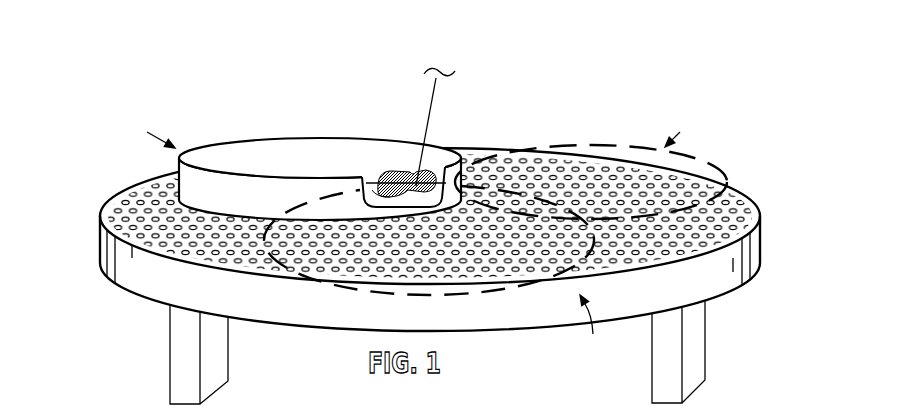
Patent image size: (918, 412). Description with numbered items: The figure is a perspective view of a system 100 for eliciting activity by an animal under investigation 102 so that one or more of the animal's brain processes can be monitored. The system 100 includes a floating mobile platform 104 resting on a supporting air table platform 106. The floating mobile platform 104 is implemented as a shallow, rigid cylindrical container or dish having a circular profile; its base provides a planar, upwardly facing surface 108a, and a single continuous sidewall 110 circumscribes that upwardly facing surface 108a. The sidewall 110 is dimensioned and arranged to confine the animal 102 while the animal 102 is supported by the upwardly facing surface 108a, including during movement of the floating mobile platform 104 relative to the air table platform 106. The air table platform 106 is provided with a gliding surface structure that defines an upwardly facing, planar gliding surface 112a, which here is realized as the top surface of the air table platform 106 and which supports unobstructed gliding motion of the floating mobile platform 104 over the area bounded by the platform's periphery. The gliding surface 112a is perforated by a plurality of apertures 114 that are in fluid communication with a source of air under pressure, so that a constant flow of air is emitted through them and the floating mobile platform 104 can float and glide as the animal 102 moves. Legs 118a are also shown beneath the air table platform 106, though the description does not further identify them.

The system 100 is at (407, 213).
The animal under investigation 102 is at (394, 175).
The floating mobile platform 104 is at (320, 144).
The supporting air table platform 106 is at (417, 280).
The upwardly facing surface 108a is at (307, 176).
The sidewall 110 is at (288, 210).
The gliding surface 112a is at (564, 163).
The apertures 114 is at (112, 210).
The leg 118a is at (437, 356).